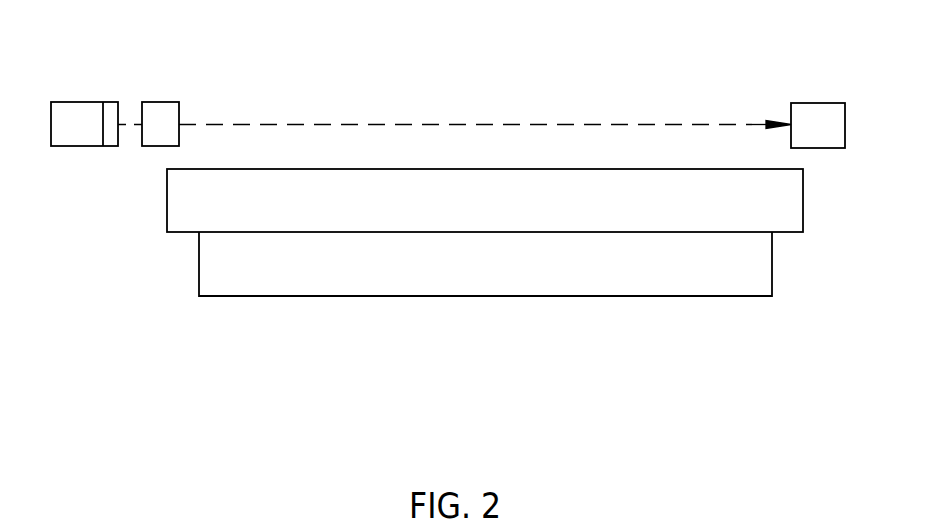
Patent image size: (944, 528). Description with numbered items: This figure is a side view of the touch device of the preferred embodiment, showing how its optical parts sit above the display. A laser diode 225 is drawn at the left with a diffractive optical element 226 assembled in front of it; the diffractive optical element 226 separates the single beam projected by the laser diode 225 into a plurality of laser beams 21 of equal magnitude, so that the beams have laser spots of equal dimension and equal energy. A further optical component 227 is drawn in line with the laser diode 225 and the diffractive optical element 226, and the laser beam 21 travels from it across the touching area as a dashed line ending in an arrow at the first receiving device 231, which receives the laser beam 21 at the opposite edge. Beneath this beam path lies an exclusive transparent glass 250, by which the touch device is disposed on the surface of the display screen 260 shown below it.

The laser beam 21 is at (538, 126).
The laser diode 225 is at (65, 117).
The diffractive optical element 226 is at (110, 117).
The optical element 227 is at (163, 117).
The first receiving device 231 is at (812, 117).
The transparent glass 250 is at (770, 210).
The display screen 260 is at (740, 278).